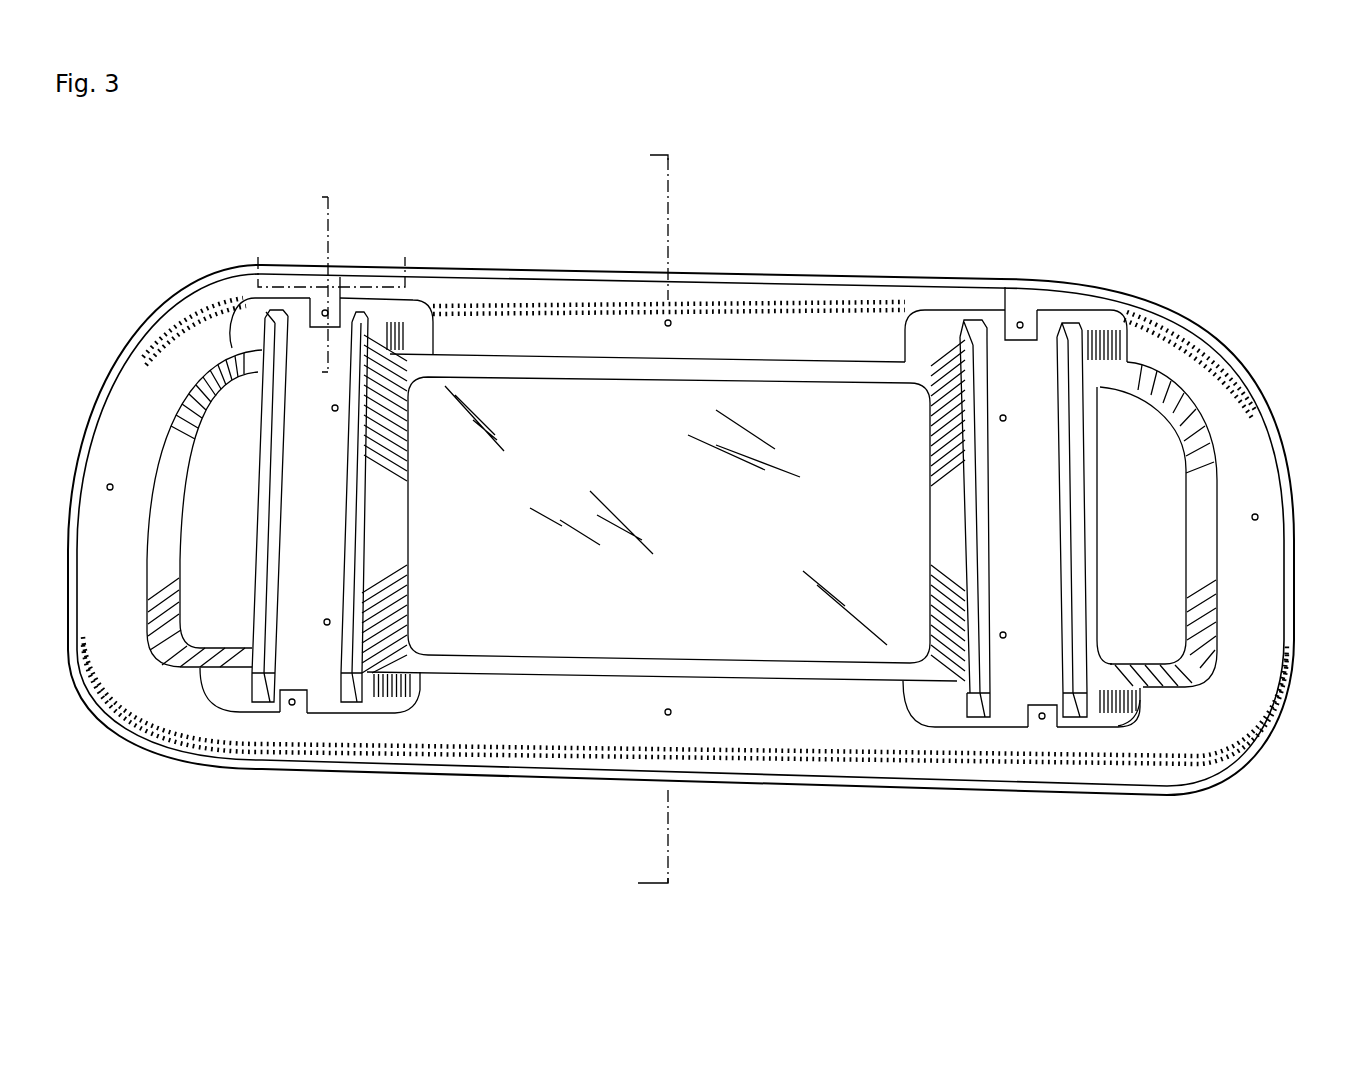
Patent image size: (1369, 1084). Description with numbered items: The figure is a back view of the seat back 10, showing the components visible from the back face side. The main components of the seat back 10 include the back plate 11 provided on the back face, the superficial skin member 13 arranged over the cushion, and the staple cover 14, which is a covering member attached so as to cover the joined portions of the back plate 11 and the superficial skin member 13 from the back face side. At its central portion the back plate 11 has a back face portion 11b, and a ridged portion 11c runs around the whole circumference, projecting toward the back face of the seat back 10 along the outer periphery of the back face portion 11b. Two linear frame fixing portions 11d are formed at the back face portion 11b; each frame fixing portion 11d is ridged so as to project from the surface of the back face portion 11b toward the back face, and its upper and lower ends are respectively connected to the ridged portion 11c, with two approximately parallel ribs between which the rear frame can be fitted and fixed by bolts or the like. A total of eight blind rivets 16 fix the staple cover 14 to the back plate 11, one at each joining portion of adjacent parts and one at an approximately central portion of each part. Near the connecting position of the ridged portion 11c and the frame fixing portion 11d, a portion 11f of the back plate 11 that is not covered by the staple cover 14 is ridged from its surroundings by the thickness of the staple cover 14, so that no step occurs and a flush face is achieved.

The seat back 10 is at (140, 198).
The back plate 11 is at (545, 410).
The back face portion 11b is at (520, 640).
The ridged portion 11c is at (1163, 395).
The frame fixing portion 11d is at (312, 673).
The ridged portion not covered with the staple cover 11f is at (1127, 710).
The superficial skin member 13 is at (873, 279).
The staple cover 14 is at (777, 292).
The blind rivet 16 is at (1021, 322).